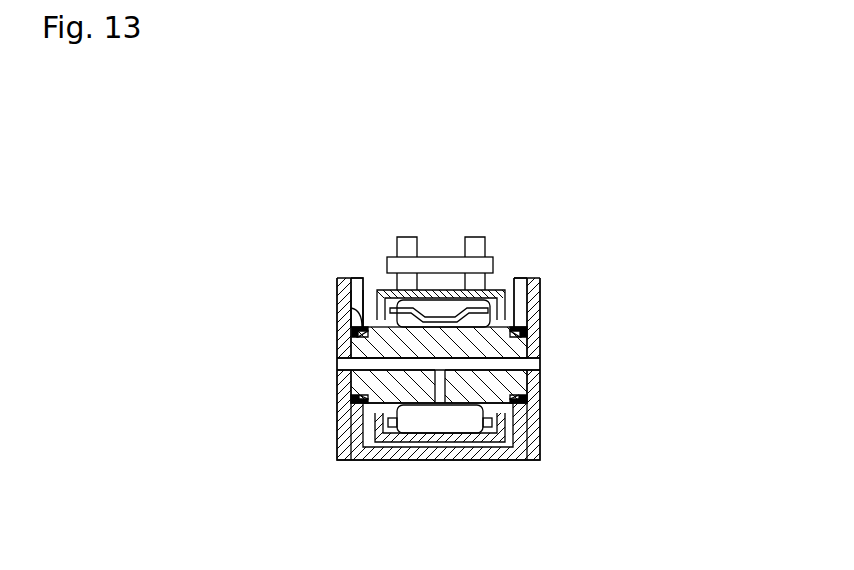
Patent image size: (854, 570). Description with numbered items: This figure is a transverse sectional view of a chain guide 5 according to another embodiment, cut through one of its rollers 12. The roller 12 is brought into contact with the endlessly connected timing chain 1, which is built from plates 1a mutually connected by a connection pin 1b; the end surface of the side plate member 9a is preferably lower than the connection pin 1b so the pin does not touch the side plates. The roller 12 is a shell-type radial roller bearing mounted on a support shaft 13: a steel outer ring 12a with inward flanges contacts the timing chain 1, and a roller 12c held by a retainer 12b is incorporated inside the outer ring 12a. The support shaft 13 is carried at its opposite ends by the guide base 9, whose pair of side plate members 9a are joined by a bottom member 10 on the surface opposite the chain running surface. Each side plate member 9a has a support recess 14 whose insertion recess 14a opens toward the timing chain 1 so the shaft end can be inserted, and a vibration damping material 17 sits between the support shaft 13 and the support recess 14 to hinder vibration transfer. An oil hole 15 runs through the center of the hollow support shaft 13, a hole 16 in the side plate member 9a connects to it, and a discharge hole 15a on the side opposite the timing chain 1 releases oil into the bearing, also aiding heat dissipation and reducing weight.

The timing chain 1 is at (453, 195).
The plate 1a is at (477, 242).
The connection pin 1b is at (435, 258).
The chain guide 5 is at (327, 292).
The guide base 9 is at (337, 335).
The side plate member 9a is at (350, 335).
The bottom member 10 is at (460, 452).
The roller 12 is at (531, 267).
The steel outer ring 12a is at (505, 292).
The retainer 12b is at (495, 300).
The roller 12c is at (477, 320).
The support shaft 13 is at (525, 392).
The support recess 14 is at (365, 272).
The insertion recess 14a is at (360, 288).
The oil hole 15 is at (408, 363).
The discharge hole 15a is at (437, 393).
The hole 16 is at (532, 367).
The vibration damping material 17 is at (351, 308).